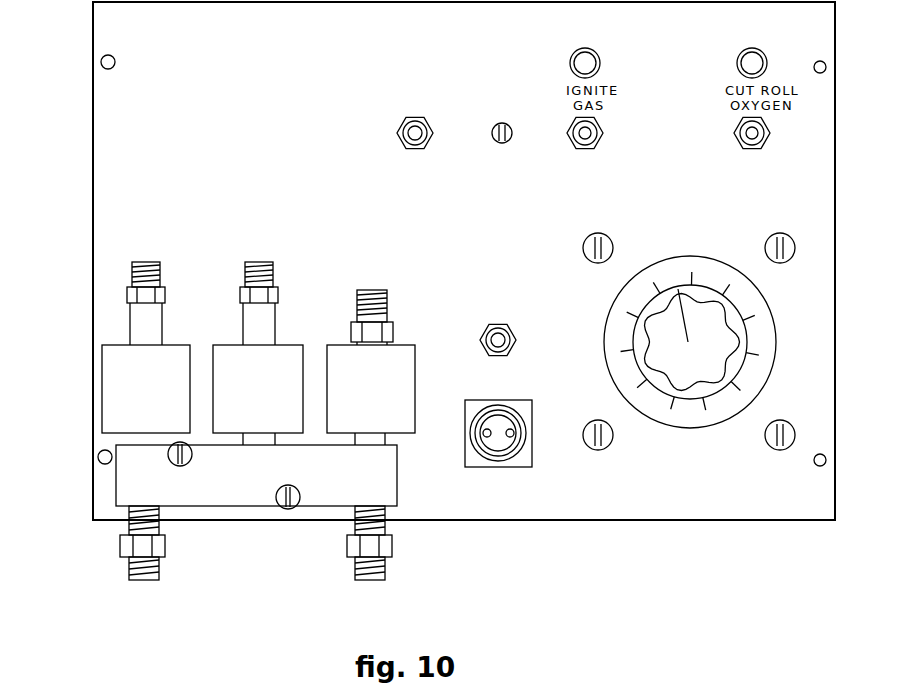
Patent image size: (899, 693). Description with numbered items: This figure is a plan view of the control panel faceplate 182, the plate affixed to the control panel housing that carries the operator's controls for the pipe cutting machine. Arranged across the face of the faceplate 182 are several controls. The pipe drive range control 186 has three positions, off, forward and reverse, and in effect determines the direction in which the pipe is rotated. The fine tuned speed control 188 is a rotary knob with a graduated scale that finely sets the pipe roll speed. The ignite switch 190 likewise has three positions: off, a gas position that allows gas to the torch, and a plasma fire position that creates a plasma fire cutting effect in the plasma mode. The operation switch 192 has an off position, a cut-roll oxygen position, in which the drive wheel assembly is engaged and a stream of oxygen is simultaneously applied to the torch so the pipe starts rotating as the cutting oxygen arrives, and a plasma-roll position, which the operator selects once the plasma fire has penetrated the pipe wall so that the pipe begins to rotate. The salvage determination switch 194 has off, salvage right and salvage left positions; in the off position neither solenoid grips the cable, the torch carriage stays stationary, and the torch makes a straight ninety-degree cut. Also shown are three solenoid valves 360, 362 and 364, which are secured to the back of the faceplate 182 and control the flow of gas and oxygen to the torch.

The control panel faceplate 182 is at (113, 158).
The pipe drive range control 186 is at (395, 137).
The fine tuned speed control 188 is at (710, 370).
The ignite switch 190 is at (601, 125).
The operation switch 192 is at (770, 135).
The salvage determination switch 194 is at (514, 348).
The solenoid valve 360 is at (122, 365).
The solenoid valve 362 is at (232, 368).
The solenoid valve 364 is at (348, 375).